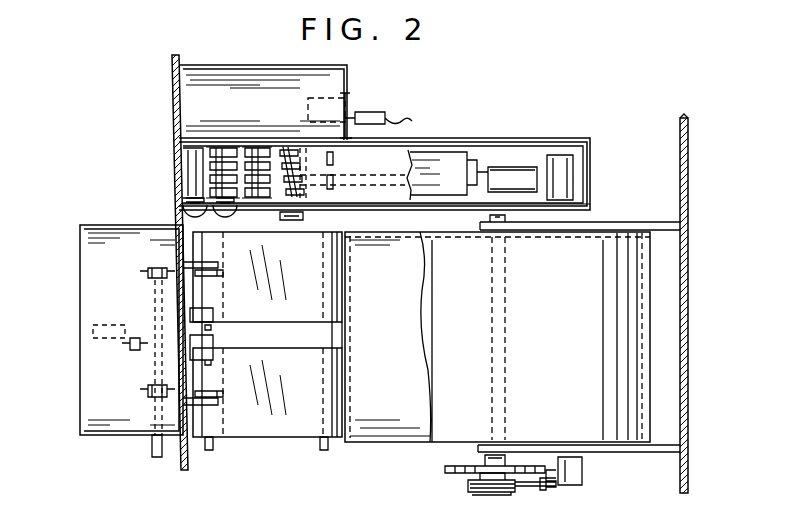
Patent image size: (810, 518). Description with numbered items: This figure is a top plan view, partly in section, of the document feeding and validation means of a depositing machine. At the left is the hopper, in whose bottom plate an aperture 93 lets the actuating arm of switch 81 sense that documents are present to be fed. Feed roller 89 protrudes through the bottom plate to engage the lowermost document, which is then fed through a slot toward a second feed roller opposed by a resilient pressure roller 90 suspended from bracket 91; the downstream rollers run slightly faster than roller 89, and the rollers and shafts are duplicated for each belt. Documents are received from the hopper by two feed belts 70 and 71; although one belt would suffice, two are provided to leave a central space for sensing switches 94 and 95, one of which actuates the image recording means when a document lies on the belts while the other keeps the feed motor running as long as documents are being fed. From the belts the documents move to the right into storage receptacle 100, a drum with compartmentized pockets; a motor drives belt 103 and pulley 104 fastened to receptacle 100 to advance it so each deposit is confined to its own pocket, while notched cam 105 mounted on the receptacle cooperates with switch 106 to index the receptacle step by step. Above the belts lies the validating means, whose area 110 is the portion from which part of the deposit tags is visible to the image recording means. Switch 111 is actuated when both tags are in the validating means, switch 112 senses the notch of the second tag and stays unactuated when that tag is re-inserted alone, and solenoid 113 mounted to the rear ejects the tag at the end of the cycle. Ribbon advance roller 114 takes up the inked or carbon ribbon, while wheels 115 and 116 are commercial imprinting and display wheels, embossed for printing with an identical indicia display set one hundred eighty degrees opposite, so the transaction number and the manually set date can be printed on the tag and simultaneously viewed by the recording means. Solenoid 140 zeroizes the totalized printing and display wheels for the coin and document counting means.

The validating means area 110 is at (188, 105).
The switch 111 is at (347, 96).
The switch 112 is at (306, 122).
The solenoid 113 is at (378, 112).
The ribbon advance roller 114 is at (192, 158).
The imprinting and indicia display wheels 115 is at (218, 178).
The date printing and display wheels 116 is at (270, 204).
The solenoid 140 is at (500, 167).
The feed belt 70 is at (267, 277).
The feed belt 71 is at (267, 386).
The switch 81 is at (93, 325).
The feed roller 89 is at (148, 272).
The resilient pressure roller 90 is at (223, 276).
The bracket 91 is at (218, 265).
The aperture 93 is at (137, 338).
The sensing switch 94 is at (213, 352).
The sensing switch 95 is at (213, 313).
The storage receptacle 100 is at (497, 337).
The belt 103 is at (530, 490).
The pulley 104 is at (475, 492).
The notched cam 105 is at (445, 470).
The switch 106 is at (582, 474).